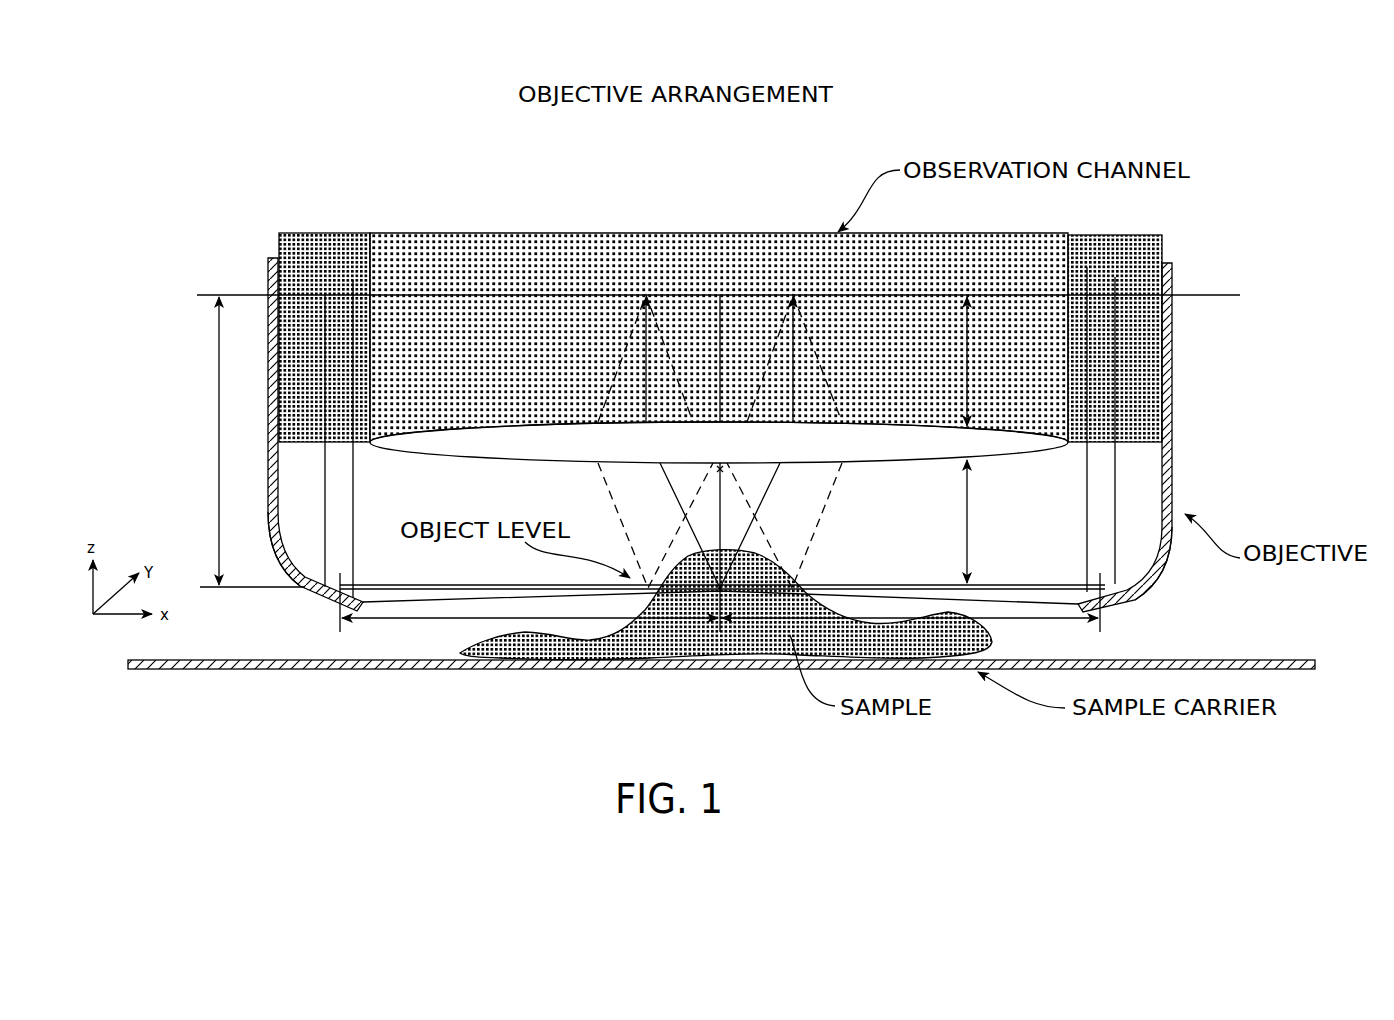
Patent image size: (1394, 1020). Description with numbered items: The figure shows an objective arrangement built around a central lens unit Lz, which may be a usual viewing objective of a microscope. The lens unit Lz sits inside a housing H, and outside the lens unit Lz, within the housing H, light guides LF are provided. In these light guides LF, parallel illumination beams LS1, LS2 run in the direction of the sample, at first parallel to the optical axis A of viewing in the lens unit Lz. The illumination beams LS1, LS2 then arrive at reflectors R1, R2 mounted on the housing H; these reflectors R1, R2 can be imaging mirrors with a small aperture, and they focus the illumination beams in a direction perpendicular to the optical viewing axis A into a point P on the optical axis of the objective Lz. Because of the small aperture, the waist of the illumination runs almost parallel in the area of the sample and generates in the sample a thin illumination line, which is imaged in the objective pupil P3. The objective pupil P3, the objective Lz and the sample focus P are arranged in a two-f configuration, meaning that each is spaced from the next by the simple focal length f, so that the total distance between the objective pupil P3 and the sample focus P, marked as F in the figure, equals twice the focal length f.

The light guides LF is at (277, 230).
The housing H is at (1175, 398).
The objective pupil P3 is at (643, 305).
The optical axis A is at (718, 318).
The central lens unit Lz is at (719, 442).
The illumination beam LS1 is at (340, 497).
The illumination beam LS2 is at (1100, 500).
The reflector R1 is at (300, 583).
The reflector R2 is at (1150, 574).
The distance between objective pupil and sample focus F is at (650, 472).
The focal length f is at (976, 440).
The sample focus P is at (712, 594).